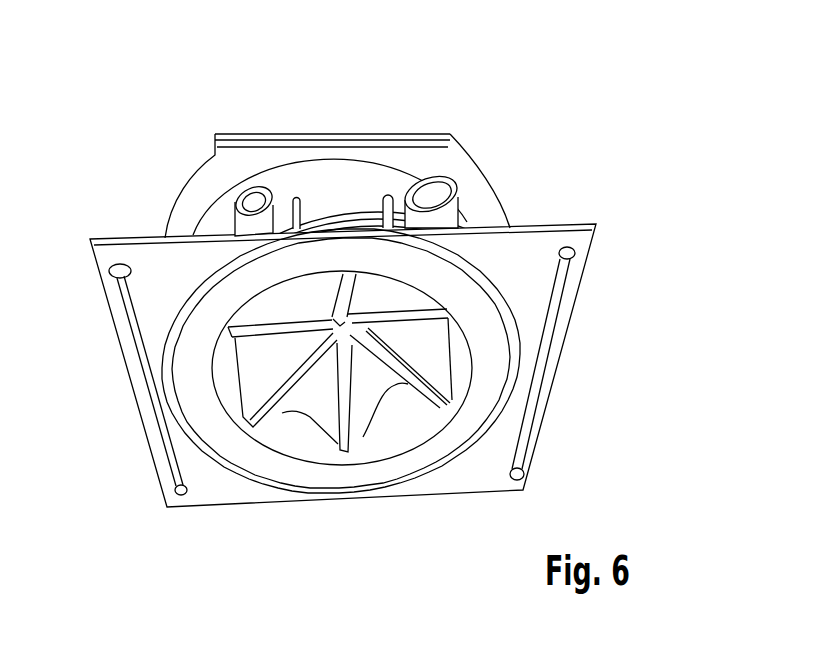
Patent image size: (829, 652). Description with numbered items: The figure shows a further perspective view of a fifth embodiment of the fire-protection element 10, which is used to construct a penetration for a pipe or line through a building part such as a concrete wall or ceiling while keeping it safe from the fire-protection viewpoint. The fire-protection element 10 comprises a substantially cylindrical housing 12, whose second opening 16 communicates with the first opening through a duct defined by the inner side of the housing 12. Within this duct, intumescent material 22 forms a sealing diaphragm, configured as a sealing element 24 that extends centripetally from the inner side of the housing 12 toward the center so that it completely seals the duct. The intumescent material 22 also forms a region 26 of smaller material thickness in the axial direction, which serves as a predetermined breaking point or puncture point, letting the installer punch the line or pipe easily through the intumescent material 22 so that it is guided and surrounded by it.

The fire-protection element 10 is at (431, 103).
The cylindrical housing 12 is at (372, 172).
The second opening 16 is at (432, 474).
The intumescent material 22 is at (308, 422).
The sealing element 24 is at (249, 348).
The region 26 is at (336, 320).